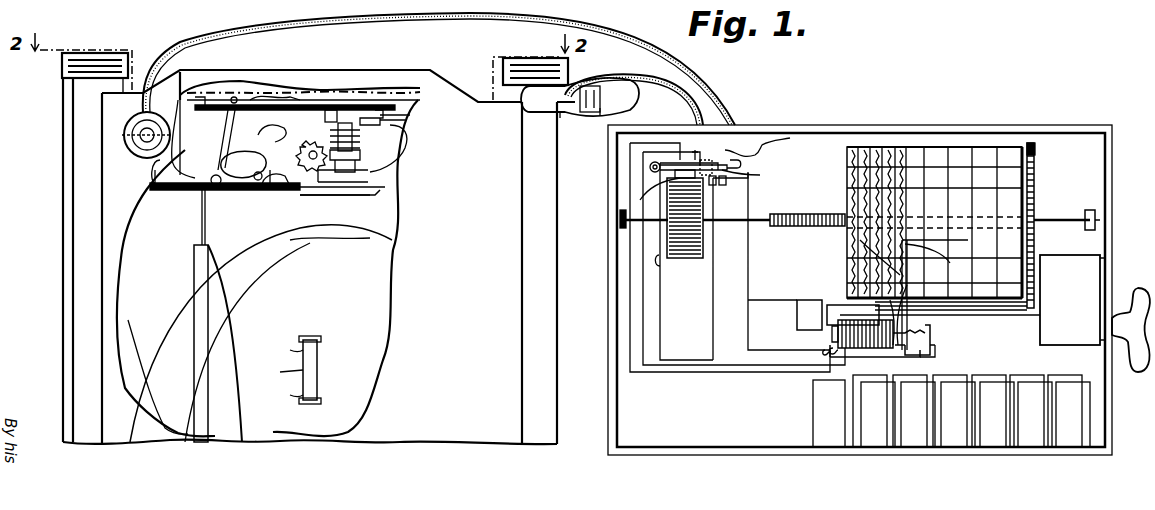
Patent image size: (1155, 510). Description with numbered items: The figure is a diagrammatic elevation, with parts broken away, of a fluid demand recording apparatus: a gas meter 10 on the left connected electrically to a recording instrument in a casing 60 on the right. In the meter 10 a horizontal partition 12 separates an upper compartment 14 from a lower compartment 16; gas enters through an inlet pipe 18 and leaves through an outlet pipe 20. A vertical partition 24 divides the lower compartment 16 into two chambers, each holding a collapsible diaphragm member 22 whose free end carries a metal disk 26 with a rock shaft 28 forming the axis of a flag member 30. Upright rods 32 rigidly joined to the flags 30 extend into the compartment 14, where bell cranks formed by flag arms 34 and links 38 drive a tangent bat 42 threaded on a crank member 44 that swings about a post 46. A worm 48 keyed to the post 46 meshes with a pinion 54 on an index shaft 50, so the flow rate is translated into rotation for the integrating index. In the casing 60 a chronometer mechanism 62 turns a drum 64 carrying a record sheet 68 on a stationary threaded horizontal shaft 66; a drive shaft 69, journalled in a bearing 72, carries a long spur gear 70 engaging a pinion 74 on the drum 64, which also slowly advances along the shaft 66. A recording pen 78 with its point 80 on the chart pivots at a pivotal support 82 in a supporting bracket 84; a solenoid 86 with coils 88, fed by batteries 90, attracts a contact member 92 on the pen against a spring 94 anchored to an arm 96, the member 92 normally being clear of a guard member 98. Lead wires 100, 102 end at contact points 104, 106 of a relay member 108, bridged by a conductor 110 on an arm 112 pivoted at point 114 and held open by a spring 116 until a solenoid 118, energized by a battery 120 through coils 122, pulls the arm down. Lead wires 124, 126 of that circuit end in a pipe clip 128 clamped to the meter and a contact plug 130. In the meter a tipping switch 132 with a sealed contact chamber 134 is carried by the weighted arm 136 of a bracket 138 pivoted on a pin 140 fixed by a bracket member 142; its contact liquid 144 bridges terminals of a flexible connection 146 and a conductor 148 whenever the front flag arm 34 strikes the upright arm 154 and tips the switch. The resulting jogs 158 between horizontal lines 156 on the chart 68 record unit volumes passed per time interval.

The meter 10 is at (435, 78).
The horizontal partition 12 is at (376, 196).
The upper compartment 14 is at (407, 140).
The lower compartment 16 is at (120, 258).
The inlet pipe 18 is at (115, 62).
The outlet pipe 20 is at (510, 85).
The diaphragm members 22 is at (368, 282).
The vertical partition 24 is at (140, 218).
The metal disk 26 is at (360, 248).
The rock shaft 28 is at (312, 337).
The flag member 30 is at (317, 380).
The upright rods 32 is at (210, 258).
The flag arms 34 is at (214, 104).
The links 38 is at (333, 110).
The tangent bat 42 is at (378, 115).
The crank member 44 is at (405, 114).
The post 46 is at (347, 124).
The worm 48 is at (362, 158).
The index shaft 50 is at (368, 178).
The pinion 54 is at (315, 140).
The casing 60 is at (832, 132).
The chronometer mechanism 62 is at (1088, 295).
The drum 64 is at (975, 158).
The horizontal shaft 66 is at (790, 214).
The record sheet 68 is at (926, 160).
The drive shaft 69 is at (890, 302).
The spur gear 70 is at (1022, 318).
The bearing 72 is at (805, 300).
The pinion 74 is at (1036, 194).
The recording pen 78 is at (934, 295).
The point 80 is at (947, 248).
The pivotal support 82 is at (913, 360).
The supporting bracket 84 is at (832, 334).
The solenoid 86 is at (855, 348).
The coils 88 is at (874, 411).
The batteries 90 is at (985, 447).
The contact member 92 is at (910, 290).
The spring 94 is at (932, 338).
The arm 96 is at (956, 345).
The guard member 98 is at (862, 244).
The lead wire 100 is at (712, 290).
The lead wire 102 is at (752, 296).
The contact point 104 is at (722, 205).
The contact point 106 is at (730, 178).
The relay member 108 is at (683, 165).
The conductor 110 is at (735, 168).
The arm 112 is at (640, 200).
The pivot point 114 is at (650, 168).
The spring 116 is at (703, 162).
The solenoid 118 is at (636, 224).
The battery 120 is at (812, 414).
The coils 122 is at (660, 242).
The lead wire 124 is at (628, 296).
The lead wire 126 is at (750, 140).
The pipe clip 128 is at (598, 92).
The contact plug 130 is at (140, 145).
The tipping switch 132 is at (245, 160).
The contact chamber 134 is at (283, 126).
The weighted arm 136 is at (270, 190).
The bracket 138 is at (270, 108).
The pivotal pin 140 is at (208, 232).
The bracket member 142 is at (180, 190).
The contact liquid 144 is at (318, 196).
The flexible connection 146 is at (185, 252).
The conductor 148 is at (186, 139).
The arm 154 is at (238, 97).
The horizontal lines 156 is at (1035, 165).
The jogs 158 is at (880, 160).